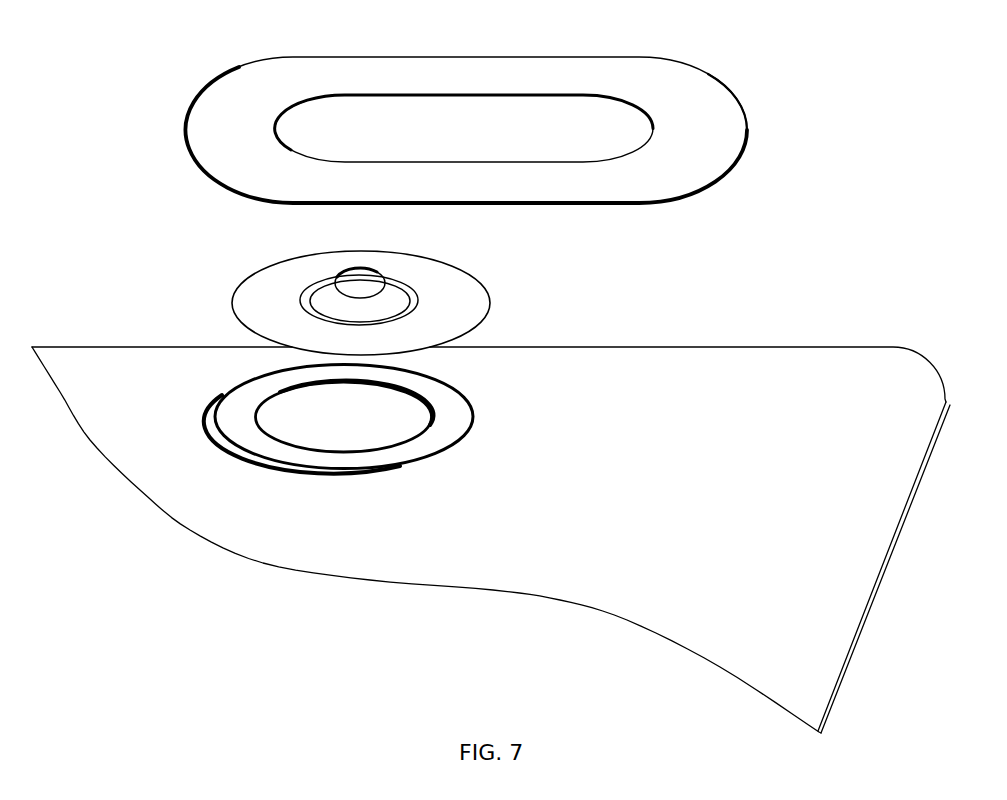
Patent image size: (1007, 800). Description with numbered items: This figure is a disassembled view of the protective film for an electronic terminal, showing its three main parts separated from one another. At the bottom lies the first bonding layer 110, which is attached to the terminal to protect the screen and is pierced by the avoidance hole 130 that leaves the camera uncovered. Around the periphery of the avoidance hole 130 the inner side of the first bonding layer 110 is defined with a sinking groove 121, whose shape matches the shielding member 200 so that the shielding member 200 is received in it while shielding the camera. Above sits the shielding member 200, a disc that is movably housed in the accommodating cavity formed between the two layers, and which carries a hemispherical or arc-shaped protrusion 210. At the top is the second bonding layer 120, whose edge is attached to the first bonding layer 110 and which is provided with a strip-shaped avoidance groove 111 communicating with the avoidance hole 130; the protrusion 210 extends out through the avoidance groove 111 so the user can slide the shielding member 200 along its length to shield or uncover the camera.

The first bonding layer 110 is at (581, 366).
The avoidance groove 111 is at (313, 115).
The second bonding layer 120 is at (197, 123).
The sinking groove 121 is at (238, 423).
The avoidance hole 130 is at (278, 420).
The shielding member 200 is at (258, 288).
The protrusion 210 is at (352, 285).